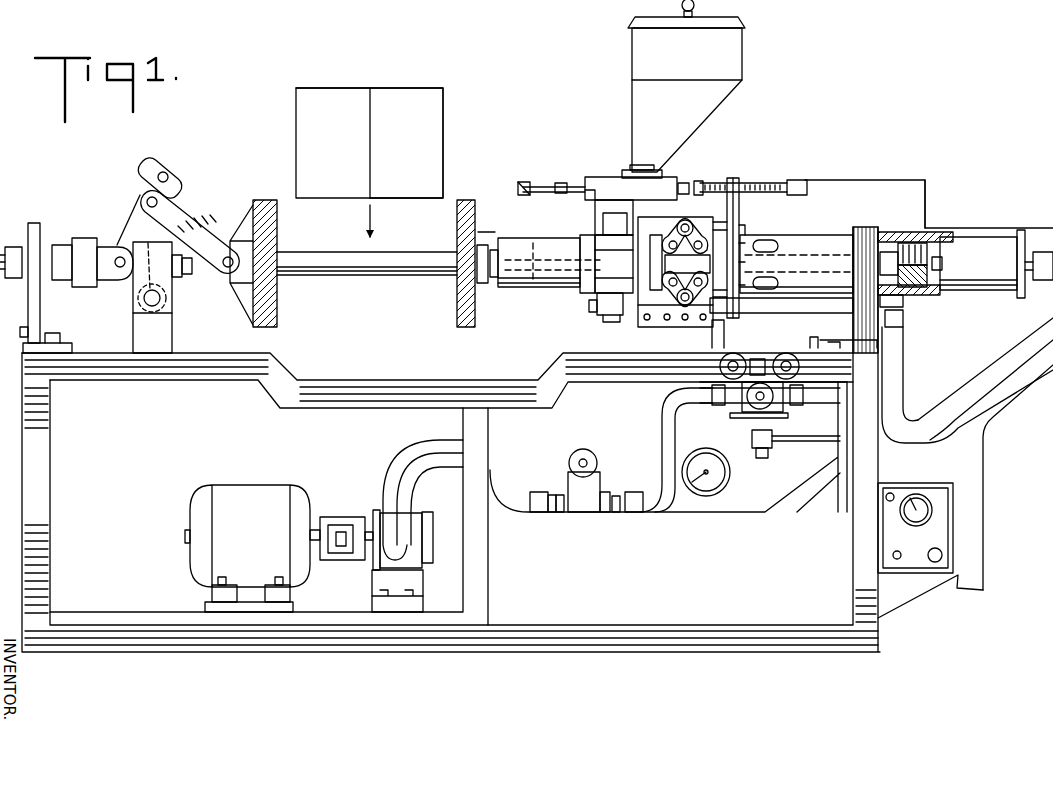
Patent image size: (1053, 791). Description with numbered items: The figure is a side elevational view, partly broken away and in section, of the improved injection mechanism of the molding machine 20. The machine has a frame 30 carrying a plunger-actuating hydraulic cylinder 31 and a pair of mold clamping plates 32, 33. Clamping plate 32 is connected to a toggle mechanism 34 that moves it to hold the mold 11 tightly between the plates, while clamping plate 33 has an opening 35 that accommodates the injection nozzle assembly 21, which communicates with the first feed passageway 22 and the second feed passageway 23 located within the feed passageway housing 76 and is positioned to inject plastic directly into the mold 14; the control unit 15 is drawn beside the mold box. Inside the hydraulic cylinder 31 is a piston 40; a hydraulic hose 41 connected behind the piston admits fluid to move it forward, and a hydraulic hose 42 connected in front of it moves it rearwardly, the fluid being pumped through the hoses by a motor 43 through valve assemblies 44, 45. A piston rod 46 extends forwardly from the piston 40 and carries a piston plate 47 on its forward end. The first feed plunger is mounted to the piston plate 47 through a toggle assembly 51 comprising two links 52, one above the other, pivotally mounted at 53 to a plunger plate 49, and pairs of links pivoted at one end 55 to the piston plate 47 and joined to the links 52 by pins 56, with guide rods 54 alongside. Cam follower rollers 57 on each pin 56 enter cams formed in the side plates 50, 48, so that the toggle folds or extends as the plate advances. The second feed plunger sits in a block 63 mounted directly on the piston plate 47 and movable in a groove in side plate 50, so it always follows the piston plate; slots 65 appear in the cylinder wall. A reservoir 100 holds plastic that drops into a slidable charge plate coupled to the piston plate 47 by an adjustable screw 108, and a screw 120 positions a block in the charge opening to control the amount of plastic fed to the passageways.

The mold 11 is at (414, 82).
The mold 14 is at (443, 110).
The control panel section 15 is at (328, 100).
The molding machine 20 is at (905, 160).
The injection nozzle assembly 21 is at (491, 222).
The first feed passageway 22 is at (537, 240).
The second feed passageway 23 is at (648, 265).
The frame 30 is at (385, 383).
The hydraulic cylinder 31 is at (985, 242).
The mold clamping plate 32 is at (278, 302).
The mold clamping plate 33 is at (458, 298).
The toggle mechanism 34 is at (198, 205).
The opening 35 is at (458, 258).
The piston 40 is at (920, 245).
The hydraulic hose 41 is at (1040, 322).
The hydraulic hose 42 is at (905, 360).
The motor 43 is at (280, 492).
The valve assembly 44 is at (613, 460).
The valve assembly 45 is at (742, 425).
The piston rod 46 is at (828, 258).
The piston plate 47 is at (735, 225).
The side plate 48 is at (616, 308).
The plunger plate 49 is at (650, 250).
The side plate 50 is at (733, 200).
The toggle assembly 51 is at (706, 228).
The link 52 is at (676, 232).
The pivot 53 is at (668, 232).
The guide rod 54 is at (730, 214).
The pivot end 55 is at (740, 240).
The pin 56 is at (685, 222).
The roller 57 is at (692, 222).
The block 63 is at (730, 262).
The slot 65 is at (775, 243).
The feed passageway housing 76 is at (532, 283).
The reservoir 100 is at (748, 85).
The adjustable screw 108 is at (778, 188).
The screw 120 is at (537, 182).